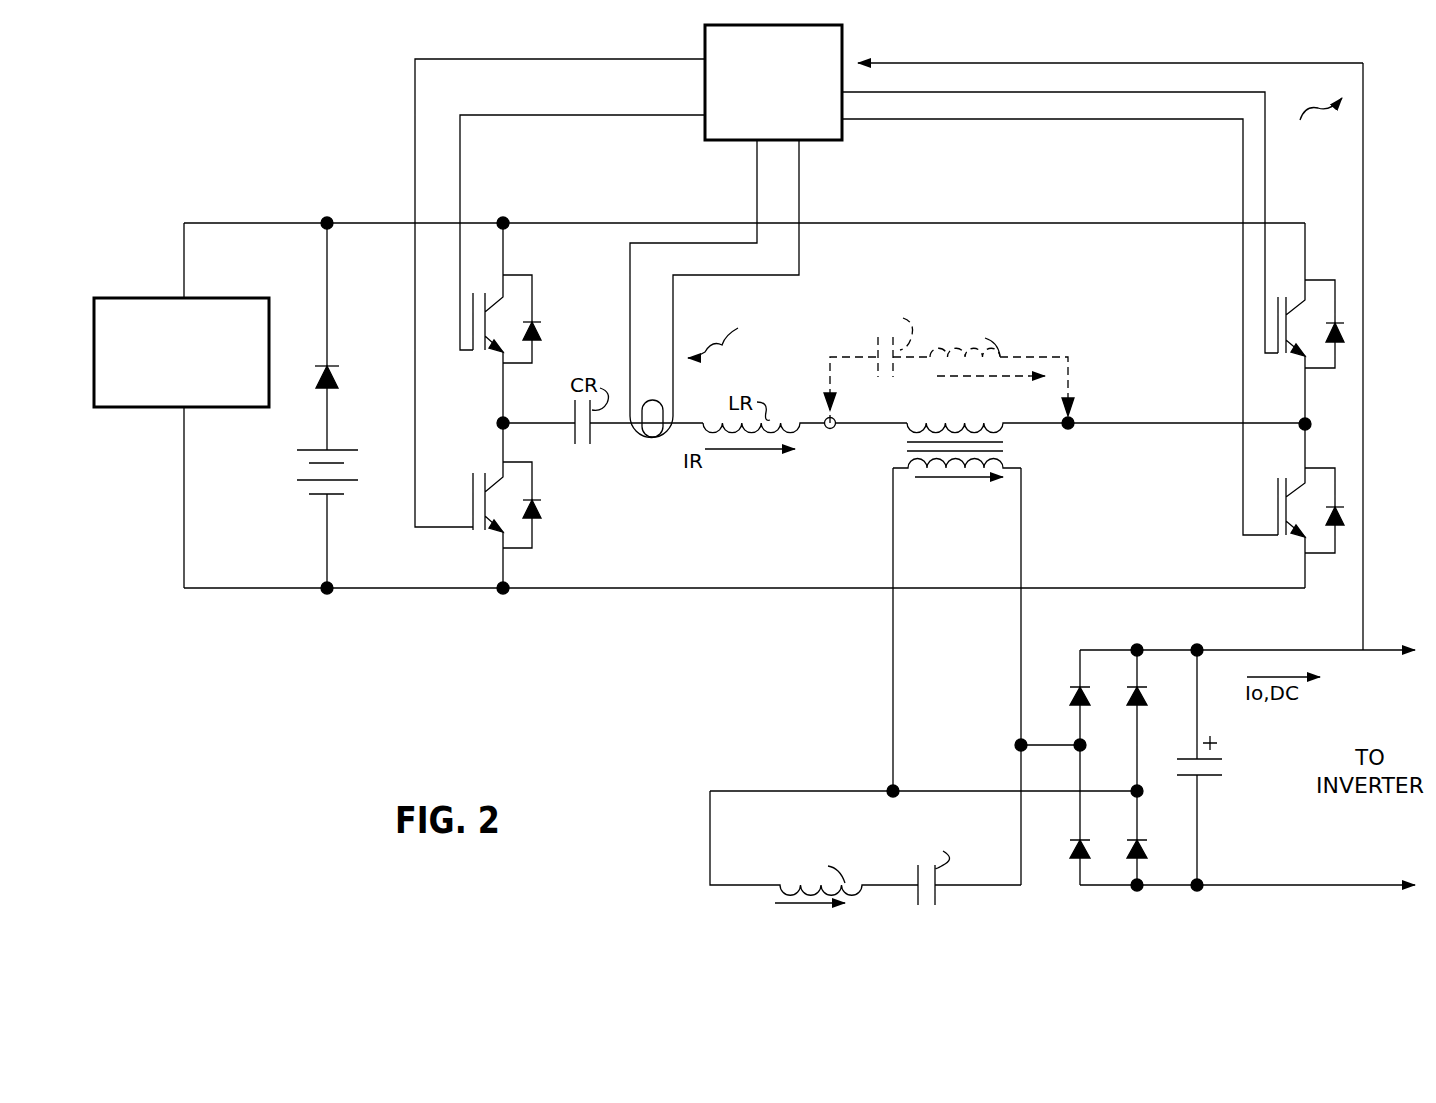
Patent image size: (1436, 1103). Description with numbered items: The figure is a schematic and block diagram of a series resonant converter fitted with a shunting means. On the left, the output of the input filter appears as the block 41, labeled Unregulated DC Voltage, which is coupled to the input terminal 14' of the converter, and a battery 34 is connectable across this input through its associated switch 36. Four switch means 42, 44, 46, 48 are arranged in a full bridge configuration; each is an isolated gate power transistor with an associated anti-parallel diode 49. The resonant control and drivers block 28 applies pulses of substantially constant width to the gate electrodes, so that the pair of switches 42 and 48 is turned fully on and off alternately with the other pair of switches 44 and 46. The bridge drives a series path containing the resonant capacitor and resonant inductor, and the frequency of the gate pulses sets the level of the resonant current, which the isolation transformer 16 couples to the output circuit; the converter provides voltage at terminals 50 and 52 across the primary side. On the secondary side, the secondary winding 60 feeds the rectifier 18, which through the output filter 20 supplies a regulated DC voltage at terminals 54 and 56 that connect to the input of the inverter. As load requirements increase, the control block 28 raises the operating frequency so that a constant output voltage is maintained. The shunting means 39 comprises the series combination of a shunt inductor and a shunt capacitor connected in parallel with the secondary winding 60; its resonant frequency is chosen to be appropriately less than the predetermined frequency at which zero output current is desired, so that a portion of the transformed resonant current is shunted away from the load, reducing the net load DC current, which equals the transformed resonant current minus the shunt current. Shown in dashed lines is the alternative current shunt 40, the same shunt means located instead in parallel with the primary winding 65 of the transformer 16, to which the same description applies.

The input terminal 14' is at (744, 405).
The isolation power transformer 16 is at (1099, 445).
The rectifier 18 is at (1100, 726).
The output filter 20 is at (1240, 760).
The resonant control and drivers 28 is at (850, 150).
The battery 34 is at (312, 450).
The switch 36 is at (333, 363).
The current shunt 39 is at (875, 850).
The alternative current shunt 40 is at (1050, 338).
The unregulated DC voltage block 41 is at (240, 298).
The switch means 42 is at (573, 256).
The switch means 44 is at (547, 497).
The switch means 46 is at (1350, 250).
The switch means 48 is at (1350, 438).
The anti-parallel diode 49 is at (545, 335).
The terminal 50 is at (835, 430).
The terminal 52 is at (1074, 428).
The terminal 54 is at (1380, 650).
The terminal 56 is at (1382, 885).
The secondary winding 60 is at (1000, 470).
The primary winding 65 is at (957, 423).